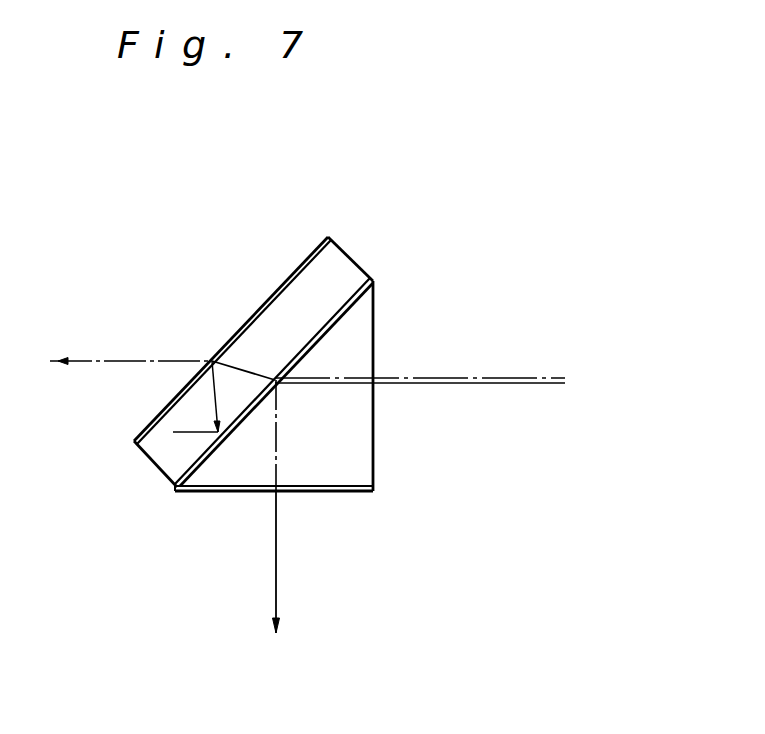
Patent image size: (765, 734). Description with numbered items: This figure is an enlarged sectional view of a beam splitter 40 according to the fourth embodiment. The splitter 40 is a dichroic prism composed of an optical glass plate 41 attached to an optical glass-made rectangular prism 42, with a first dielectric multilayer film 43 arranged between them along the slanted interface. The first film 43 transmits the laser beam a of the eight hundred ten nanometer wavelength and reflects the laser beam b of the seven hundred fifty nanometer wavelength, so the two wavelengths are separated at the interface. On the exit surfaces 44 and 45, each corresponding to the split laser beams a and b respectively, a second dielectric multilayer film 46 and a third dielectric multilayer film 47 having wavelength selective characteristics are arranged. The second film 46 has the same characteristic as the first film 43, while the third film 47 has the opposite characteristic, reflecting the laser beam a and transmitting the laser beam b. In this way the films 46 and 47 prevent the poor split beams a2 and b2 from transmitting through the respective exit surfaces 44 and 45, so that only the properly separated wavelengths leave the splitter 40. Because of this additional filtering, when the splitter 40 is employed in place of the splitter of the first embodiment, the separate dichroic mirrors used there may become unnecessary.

The beam splitter 40 is at (233, 237).
The optical glass plate 41 is at (343, 247).
The rectangular prism 42 is at (375, 342).
The first dielectric multilayer film 43 is at (362, 273).
The exit surface 44 is at (150, 458).
The exit surface 45 is at (357, 485).
The second dielectric multilayer film 46 is at (147, 426).
The third dielectric multilayer film 47 is at (340, 492).
The laser beam a is at (85, 357).
The laser beam b is at (275, 572).
The poor split beam a2 is at (283, 435).
The poor split beam b2 is at (214, 397).